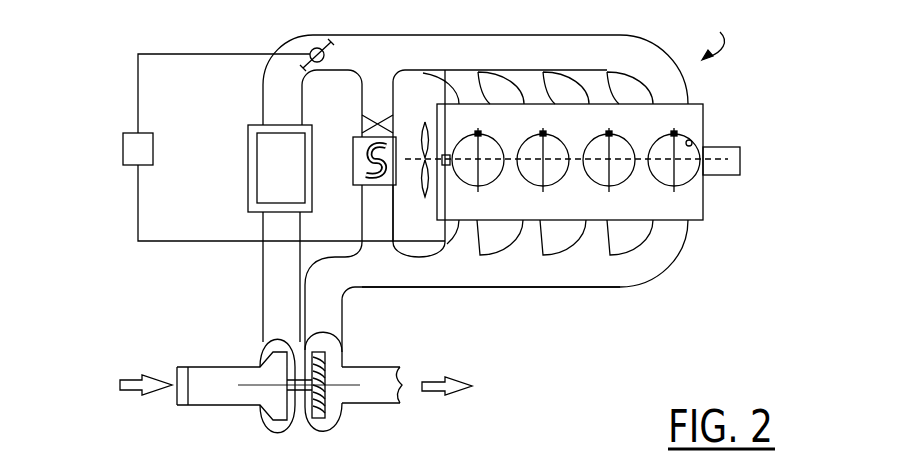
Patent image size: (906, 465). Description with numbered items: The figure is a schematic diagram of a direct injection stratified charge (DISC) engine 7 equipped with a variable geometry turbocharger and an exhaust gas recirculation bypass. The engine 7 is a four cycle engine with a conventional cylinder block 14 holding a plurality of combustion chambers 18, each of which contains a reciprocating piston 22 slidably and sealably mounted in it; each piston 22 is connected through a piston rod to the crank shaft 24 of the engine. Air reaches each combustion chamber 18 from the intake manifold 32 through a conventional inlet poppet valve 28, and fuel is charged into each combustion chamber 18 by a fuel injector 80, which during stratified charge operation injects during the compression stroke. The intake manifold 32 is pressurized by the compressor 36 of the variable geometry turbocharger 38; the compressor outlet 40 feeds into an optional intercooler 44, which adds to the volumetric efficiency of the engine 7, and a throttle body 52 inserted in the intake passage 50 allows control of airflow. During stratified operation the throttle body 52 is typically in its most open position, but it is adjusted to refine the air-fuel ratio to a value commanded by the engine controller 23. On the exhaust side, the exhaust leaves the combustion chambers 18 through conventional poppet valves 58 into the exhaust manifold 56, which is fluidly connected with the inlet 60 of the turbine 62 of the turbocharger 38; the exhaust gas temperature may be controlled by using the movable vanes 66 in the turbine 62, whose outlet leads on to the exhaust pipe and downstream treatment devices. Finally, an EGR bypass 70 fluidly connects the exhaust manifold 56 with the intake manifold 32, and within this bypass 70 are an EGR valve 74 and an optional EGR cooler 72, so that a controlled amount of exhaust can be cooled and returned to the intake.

The DISC engine 7 is at (713, 39).
The cylinder block 14 is at (702, 212).
The combustion chamber 18 is at (692, 140).
The piston 22 is at (622, 177).
The engine controller 23 is at (153, 143).
The crank shaft 24 is at (735, 156).
The inlet poppet valve 28 is at (545, 133).
The intake manifold 32 is at (470, 33).
The compressor 36 is at (257, 365).
The variable geometry turbocharger 38 is at (290, 428).
The compressor outlet 40 is at (283, 333).
The intercooler 44 is at (247, 152).
The intake passage 50 is at (278, 50).
The throttle body 52 is at (332, 25).
The exhaust manifold 56 is at (507, 288).
The exhaust poppet valve 58 is at (597, 222).
The turbine inlet 60 is at (322, 337).
The turbine 62 is at (333, 375).
The movable vanes 66 is at (340, 427).
The EGR bypass 70 is at (397, 90).
The EGR cooler 72 is at (352, 175).
The EGR valve 74 is at (362, 125).
The fuel injector 80 is at (448, 155).